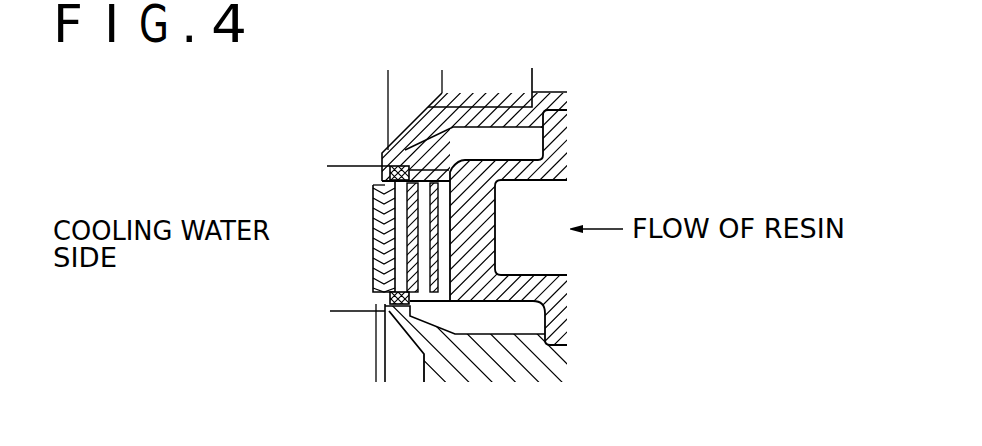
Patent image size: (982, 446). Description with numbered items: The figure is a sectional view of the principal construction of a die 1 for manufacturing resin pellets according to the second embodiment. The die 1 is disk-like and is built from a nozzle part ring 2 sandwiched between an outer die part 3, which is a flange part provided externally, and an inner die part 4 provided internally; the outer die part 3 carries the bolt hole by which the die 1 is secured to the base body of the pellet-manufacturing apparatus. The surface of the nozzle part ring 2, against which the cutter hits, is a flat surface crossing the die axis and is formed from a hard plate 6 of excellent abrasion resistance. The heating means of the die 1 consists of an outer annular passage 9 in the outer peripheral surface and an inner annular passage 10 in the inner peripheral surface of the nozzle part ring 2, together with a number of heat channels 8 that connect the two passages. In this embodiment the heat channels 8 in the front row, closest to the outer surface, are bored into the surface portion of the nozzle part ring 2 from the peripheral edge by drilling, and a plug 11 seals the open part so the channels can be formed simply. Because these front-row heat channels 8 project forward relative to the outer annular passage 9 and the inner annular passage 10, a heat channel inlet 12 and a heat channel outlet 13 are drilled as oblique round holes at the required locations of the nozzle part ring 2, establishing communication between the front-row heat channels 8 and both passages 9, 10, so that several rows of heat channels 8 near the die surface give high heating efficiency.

The die 1 is at (580, 112).
The nozzle part ring 2 is at (362, 236).
The outer die part 3 is at (337, 190).
The inner die part 4 is at (337, 258).
The hard plate 6 is at (376, 189).
The heat channels 8 is at (374, 202).
The outer annular passage 9 is at (510, 156).
The inner annular passage 10 is at (507, 330).
The plug 11 is at (384, 152).
The heat channel inlet 12 is at (412, 168).
The heat channel outlet 13 is at (392, 295).